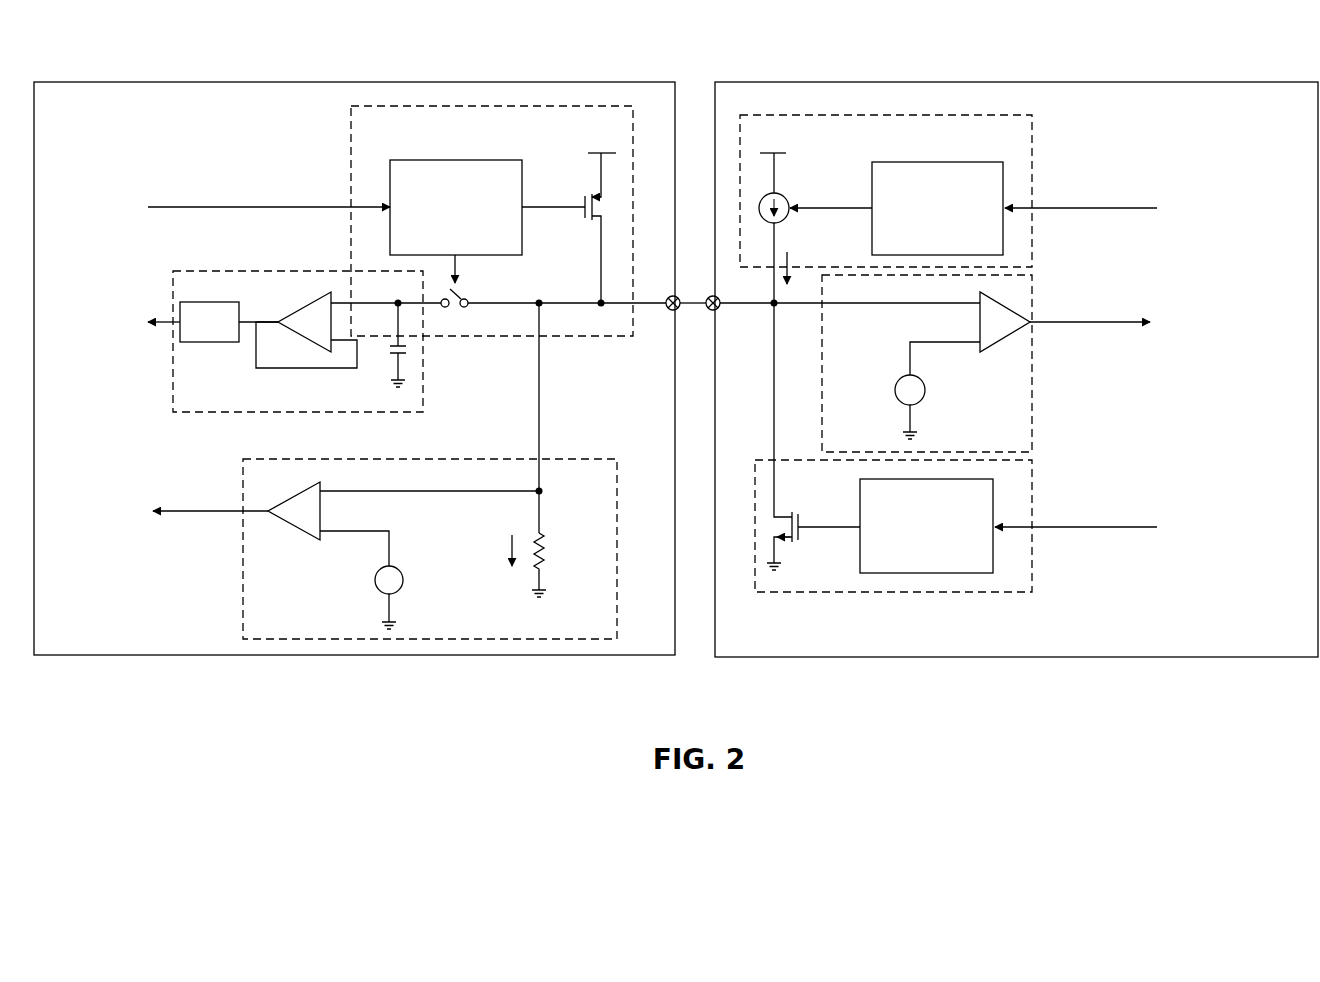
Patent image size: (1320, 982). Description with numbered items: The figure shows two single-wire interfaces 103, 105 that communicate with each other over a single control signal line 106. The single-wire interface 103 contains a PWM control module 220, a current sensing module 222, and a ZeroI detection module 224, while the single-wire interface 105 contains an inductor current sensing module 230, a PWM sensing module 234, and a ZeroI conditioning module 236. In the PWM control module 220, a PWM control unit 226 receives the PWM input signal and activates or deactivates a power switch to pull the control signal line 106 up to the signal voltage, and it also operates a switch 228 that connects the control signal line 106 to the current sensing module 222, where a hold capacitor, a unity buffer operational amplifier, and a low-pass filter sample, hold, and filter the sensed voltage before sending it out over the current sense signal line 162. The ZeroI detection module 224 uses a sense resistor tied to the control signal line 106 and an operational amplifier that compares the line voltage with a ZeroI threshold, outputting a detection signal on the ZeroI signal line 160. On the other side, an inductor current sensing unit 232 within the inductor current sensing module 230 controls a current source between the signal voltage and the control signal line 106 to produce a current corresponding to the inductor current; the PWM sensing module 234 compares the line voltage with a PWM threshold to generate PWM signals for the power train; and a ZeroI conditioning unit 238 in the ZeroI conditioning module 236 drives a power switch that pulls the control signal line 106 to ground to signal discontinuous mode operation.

The single-wire interface 103 is at (584, 82).
The single-wire interface 105 is at (778, 82).
The control signal line 106 is at (693, 310).
The ZeroI signal line 160 is at (194, 514).
The current sense signal line 162 is at (165, 332).
The PWM control module 220 is at (351, 146).
The current sensing module 222 is at (424, 400).
The ZeroI detection module 224 is at (243, 594).
The PWM control unit 226 is at (456, 207).
The switch 228 is at (471, 294).
The inductor current sensing module 230 is at (1033, 148).
The inductor current sensing unit 232 is at (937, 208).
The PWM sensing module 234 is at (1033, 399).
The ZeroI conditioning module 236 is at (1033, 574).
The ZeroI conditioning unit 238 is at (926, 526).